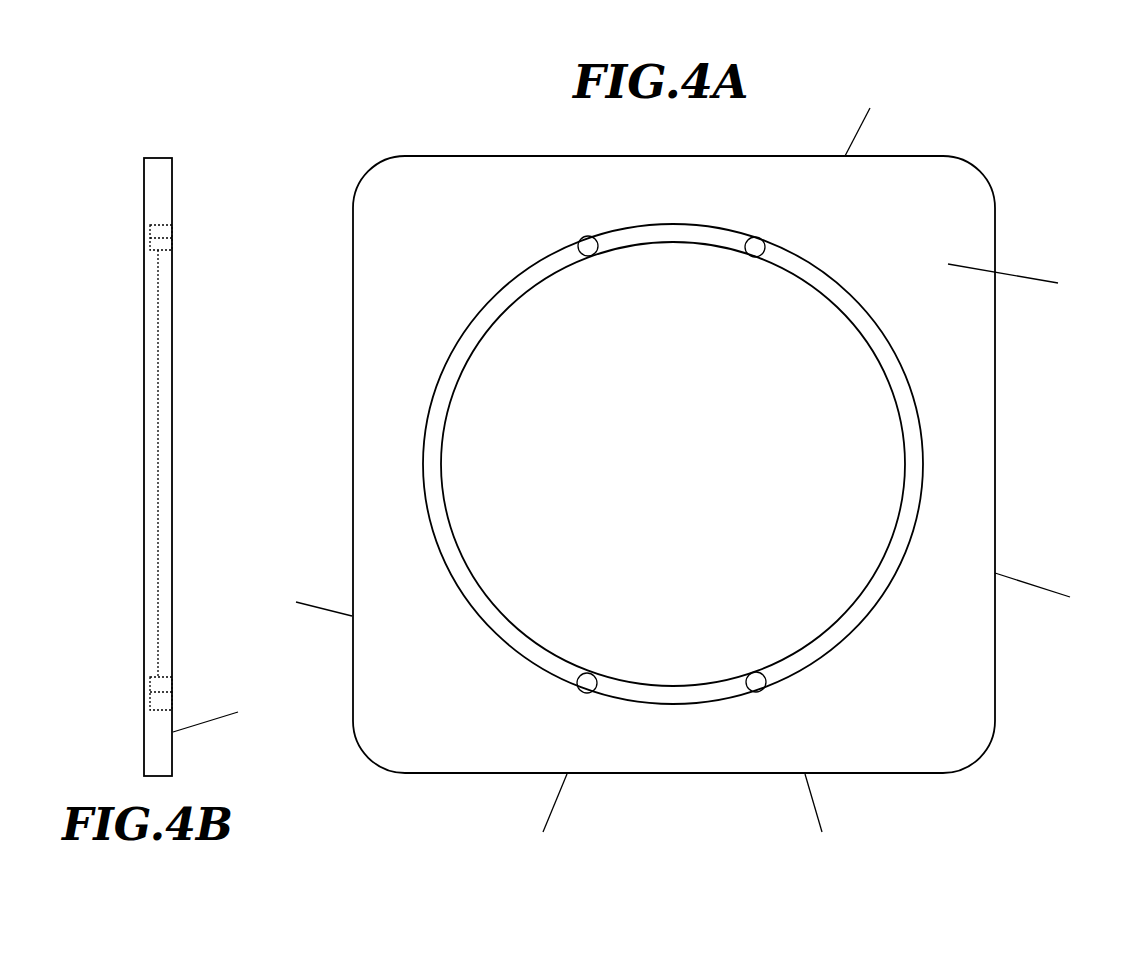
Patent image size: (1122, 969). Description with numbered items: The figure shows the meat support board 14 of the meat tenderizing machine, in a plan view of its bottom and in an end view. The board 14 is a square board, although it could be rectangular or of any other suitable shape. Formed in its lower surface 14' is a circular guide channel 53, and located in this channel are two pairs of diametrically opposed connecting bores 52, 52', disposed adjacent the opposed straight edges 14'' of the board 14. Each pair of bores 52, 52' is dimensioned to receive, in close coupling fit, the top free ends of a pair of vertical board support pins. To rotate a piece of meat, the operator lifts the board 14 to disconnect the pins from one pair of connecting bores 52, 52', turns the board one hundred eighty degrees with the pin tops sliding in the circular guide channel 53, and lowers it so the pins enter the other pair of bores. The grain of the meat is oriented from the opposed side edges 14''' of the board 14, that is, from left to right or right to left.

In FIG. 4A, the meat support board 14 is at (674, 424).
In FIG. 4B, the meat support board 14 is at (202, 429).
In FIG. 4A, the lower surface 14' is at (1022, 279).
In FIG. 4B, the lower surface 14' is at (223, 716).
In FIG. 4A, the opposed straight edges 14'' is at (707, 471).
In FIG. 4A, the opposed side edges 14''' is at (682, 594).
In FIG. 4A, the connecting bore 52 is at (668, 462).
In FIG. 4B, the connecting bore 52 is at (194, 467).
In FIG. 4A, the connecting bore 52' is at (668, 462).
In FIG. 4A, the circular guide channel 53 is at (432, 463).
In FIG. 4B, the circular guide channel 53 is at (165, 463).